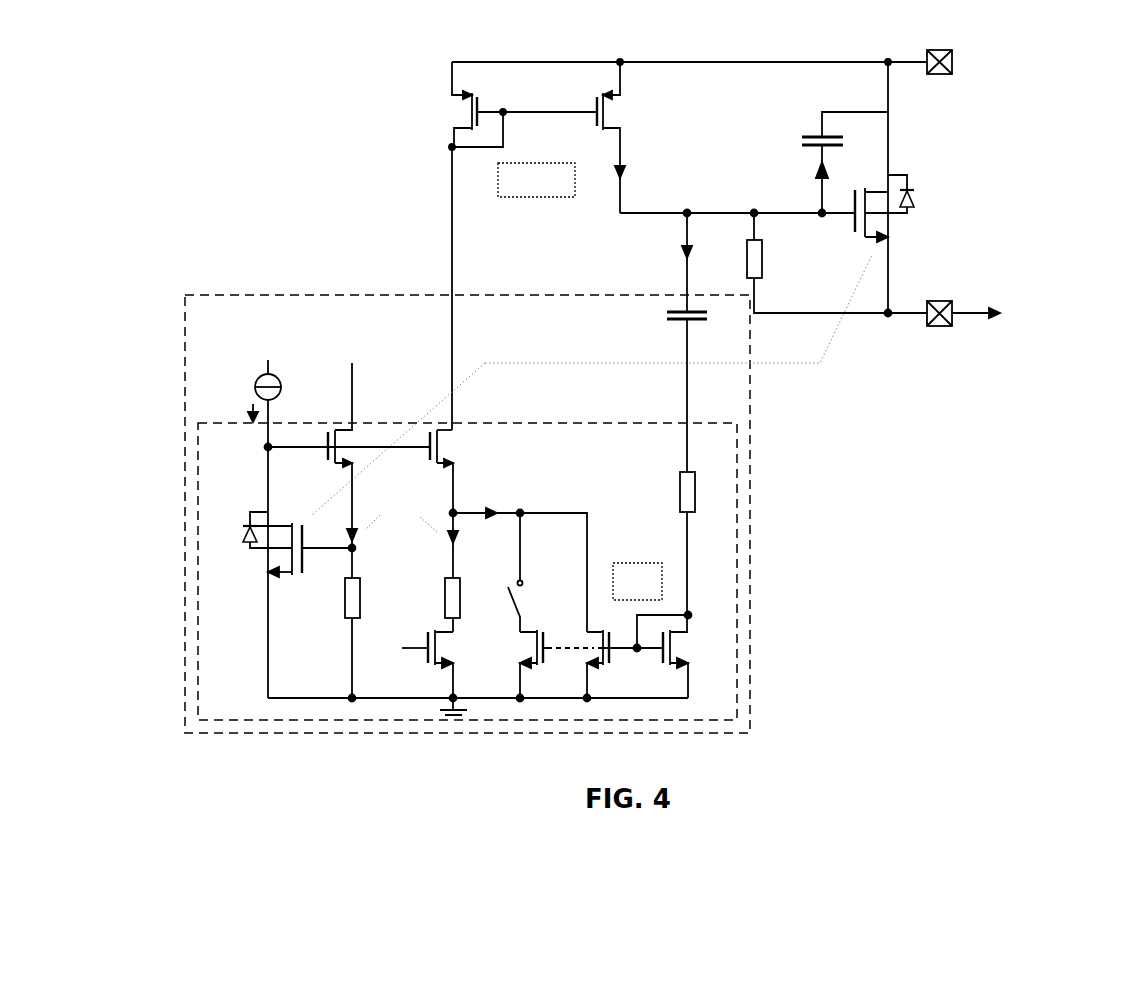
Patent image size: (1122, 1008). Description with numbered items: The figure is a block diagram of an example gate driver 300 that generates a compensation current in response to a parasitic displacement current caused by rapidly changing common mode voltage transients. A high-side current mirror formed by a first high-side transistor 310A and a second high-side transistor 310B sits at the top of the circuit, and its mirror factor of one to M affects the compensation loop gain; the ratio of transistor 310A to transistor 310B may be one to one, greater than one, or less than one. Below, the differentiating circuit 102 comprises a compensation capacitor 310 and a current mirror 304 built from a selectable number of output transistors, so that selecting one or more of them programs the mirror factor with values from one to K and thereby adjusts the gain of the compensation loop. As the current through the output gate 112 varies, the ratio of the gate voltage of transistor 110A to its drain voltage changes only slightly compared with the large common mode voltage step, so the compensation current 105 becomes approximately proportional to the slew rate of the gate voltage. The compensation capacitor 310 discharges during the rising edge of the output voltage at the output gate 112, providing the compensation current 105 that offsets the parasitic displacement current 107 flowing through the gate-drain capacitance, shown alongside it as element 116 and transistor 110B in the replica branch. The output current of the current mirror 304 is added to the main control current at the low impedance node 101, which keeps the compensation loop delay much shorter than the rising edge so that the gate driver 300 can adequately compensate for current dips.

The gate driver 300 is at (160, 92).
The transistor Mh1 310A is at (478, 92).
The transistor Mh2 310B is at (596, 128).
The node 101 is at (690, 212).
The compensation current 105 is at (642, 260).
The compensation capacitor 310 is at (703, 318).
The gate-drain capacitance Cgd 116 is at (817, 136).
The parasitic displacement current 107 is at (858, 167).
The transistor 110A is at (902, 175).
The output gate 112 is at (935, 327).
The differentiating circuit 102 is at (278, 295).
The replica transistor M 110B is at (268, 566).
The current mirror 304 is at (557, 423).